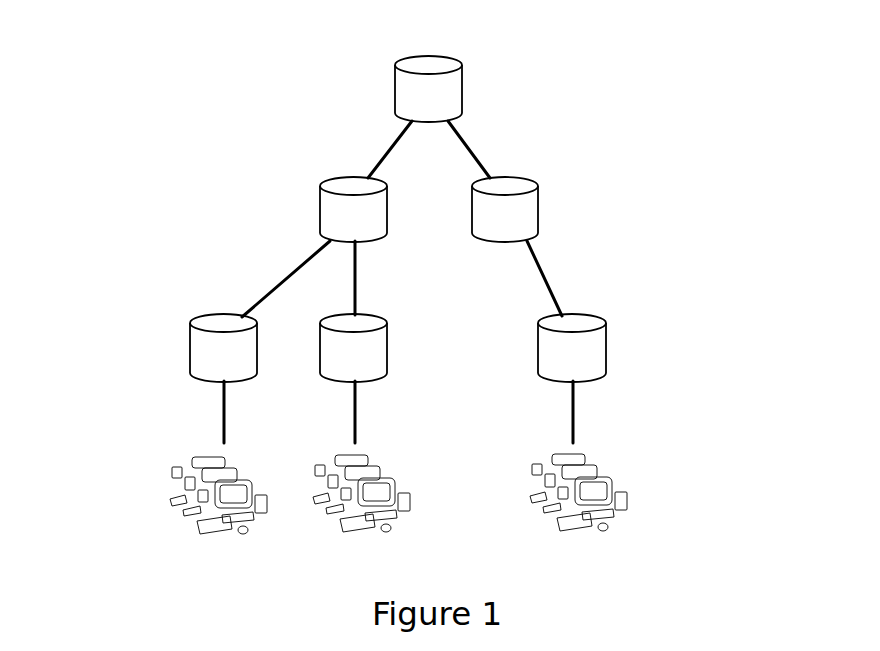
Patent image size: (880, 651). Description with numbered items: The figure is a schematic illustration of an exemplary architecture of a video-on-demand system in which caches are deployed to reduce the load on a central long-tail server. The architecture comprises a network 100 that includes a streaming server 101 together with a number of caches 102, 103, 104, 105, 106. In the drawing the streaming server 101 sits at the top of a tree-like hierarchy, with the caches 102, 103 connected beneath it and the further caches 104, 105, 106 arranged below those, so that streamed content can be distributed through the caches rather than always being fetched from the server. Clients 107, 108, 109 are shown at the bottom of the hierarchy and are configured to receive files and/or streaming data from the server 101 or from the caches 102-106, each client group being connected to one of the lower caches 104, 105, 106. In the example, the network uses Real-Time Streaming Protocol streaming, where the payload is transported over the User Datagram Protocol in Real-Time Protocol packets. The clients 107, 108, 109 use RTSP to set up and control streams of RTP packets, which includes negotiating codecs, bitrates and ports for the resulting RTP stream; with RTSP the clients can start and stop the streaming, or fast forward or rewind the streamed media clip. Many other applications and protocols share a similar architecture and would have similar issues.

The network 100 is at (130, 175).
The streaming server 101 is at (462, 101).
The cache 102 is at (320, 209).
The cache 103 is at (538, 208).
The cache 104 is at (190, 352).
The cache 105 is at (387, 349).
The cache 106 is at (606, 349).
The client 107 is at (148, 489).
The client 108 is at (415, 491).
The client 109 is at (650, 488).